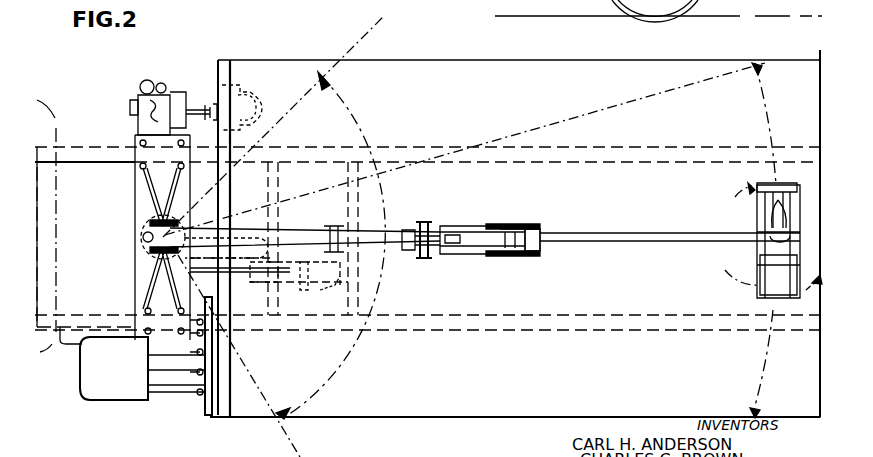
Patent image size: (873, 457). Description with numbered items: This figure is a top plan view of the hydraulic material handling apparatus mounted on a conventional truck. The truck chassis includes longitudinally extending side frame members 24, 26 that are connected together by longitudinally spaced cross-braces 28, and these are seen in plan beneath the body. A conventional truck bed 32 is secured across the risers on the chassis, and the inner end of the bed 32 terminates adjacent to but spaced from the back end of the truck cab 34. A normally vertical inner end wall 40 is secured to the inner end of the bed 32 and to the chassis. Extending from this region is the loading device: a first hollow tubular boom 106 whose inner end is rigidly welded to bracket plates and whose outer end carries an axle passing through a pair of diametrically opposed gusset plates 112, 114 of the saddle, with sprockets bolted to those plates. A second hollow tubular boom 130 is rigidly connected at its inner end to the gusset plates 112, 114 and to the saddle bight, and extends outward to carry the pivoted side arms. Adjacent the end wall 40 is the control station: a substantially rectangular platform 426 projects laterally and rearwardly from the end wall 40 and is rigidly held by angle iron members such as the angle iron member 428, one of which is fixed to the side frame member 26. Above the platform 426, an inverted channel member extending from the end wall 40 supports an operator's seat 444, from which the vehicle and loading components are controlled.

The truck bed 32 is at (437, 80).
The truck cab 34 is at (55, 132).
The inner end wall 40 is at (222, 70).
The side frame member 24 is at (640, 147).
The side frame member 26 is at (645, 330).
The first hollow tubular boom 106 is at (292, 240).
The cross-braces 28 is at (357, 281).
The gusset plate 112 is at (545, 230).
The gusset plate 114 is at (540, 255).
The second hollow tubular boom 130 is at (644, 243).
The operator's seat 444 is at (103, 385).
The angle iron member 428 is at (158, 393).
The platform 426 is at (185, 385).